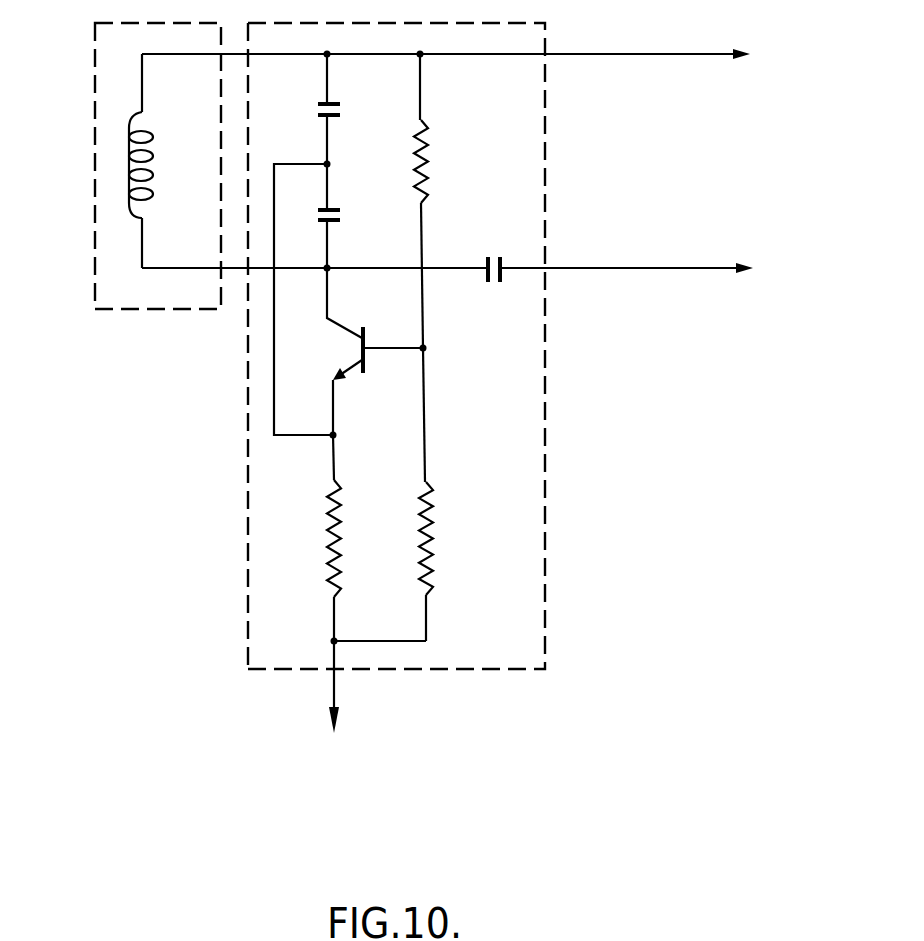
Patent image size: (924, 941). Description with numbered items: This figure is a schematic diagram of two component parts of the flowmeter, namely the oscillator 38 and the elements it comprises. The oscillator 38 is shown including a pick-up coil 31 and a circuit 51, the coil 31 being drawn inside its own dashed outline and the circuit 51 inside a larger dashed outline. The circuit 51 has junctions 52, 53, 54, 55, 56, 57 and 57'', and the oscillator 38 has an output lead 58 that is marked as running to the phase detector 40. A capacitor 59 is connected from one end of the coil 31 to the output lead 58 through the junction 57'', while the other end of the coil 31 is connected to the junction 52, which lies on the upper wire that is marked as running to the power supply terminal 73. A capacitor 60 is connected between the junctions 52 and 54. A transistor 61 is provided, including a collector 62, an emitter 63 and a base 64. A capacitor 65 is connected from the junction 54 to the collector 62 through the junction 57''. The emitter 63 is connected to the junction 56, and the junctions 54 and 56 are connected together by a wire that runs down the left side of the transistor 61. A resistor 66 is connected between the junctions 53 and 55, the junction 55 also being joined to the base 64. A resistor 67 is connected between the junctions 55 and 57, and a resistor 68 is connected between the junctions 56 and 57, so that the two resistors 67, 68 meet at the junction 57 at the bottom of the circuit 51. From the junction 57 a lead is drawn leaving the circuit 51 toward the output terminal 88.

The pick-up coil 31 is at (90, 305).
The oscillator 38 is at (590, 477).
The circuit 51 is at (236, 546).
The junction 52 is at (327, 54).
The junction 53 is at (422, 53).
The junction 54 is at (327, 164).
The junction 55 is at (424, 348).
The junction 56 is at (334, 435).
The junction 57 is at (348, 642).
The junction 57'' is at (308, 247).
The output lead 58 is at (680, 267).
The capacitor 59 is at (506, 228).
The capacitor 60 is at (338, 105).
The transistor 61 is at (354, 351).
The collector 62 is at (345, 322).
The emitter 63 is at (347, 372).
The base 64 is at (386, 348).
The capacitor 65 is at (338, 220).
The resistor 66 is at (426, 168).
The resistor 67 is at (430, 530).
The resistor 68 is at (330, 510).
The power supply terminal 73 is at (642, 54).
The phase detector 40 is at (632, 268).
The output terminal 88 is at (334, 688).